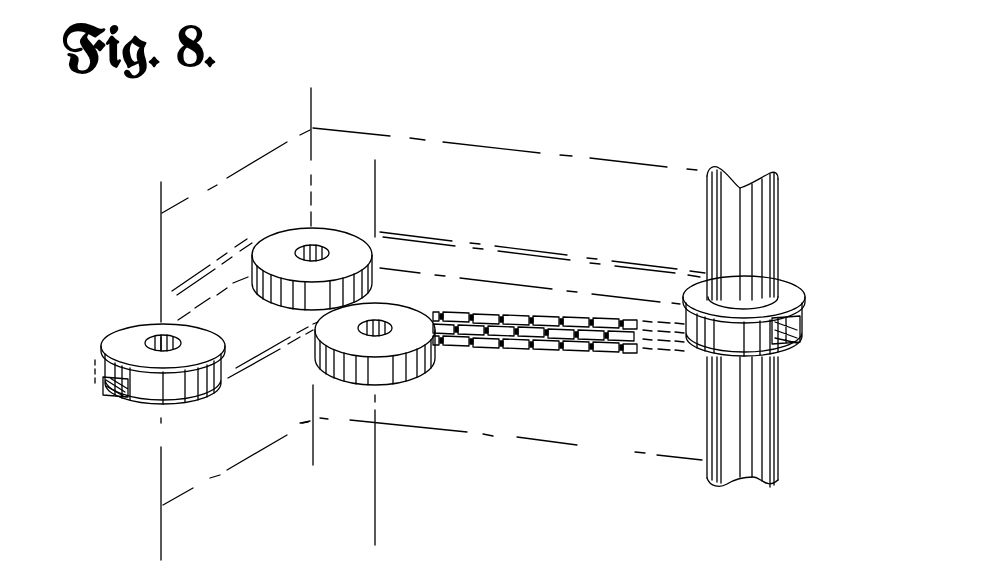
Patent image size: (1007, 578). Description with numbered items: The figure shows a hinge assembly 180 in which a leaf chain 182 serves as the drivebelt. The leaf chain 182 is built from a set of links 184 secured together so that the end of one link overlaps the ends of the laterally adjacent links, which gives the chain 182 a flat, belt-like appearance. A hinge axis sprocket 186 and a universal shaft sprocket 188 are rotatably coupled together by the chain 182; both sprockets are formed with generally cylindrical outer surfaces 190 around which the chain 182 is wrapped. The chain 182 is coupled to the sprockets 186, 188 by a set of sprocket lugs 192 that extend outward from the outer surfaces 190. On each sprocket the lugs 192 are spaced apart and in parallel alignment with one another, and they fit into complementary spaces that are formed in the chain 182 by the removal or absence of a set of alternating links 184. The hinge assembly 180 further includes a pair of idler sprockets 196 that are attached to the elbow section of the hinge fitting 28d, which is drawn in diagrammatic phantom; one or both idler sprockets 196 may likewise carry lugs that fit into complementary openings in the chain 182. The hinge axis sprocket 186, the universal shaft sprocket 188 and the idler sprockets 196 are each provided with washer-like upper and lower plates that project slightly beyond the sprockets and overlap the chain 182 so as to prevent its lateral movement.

The hinge assembly 180 is at (566, 114).
The hinge fitting 28d is at (616, 193).
The leaf chain 182 is at (590, 362).
The links 184 is at (500, 348).
The hinge axis sprocket 186 is at (125, 342).
The universal shaft sprocket 188 is at (796, 292).
The outer surfaces 190 is at (200, 398).
The sprocket lugs 192 is at (100, 393).
The idler sprockets 196 is at (340, 253).